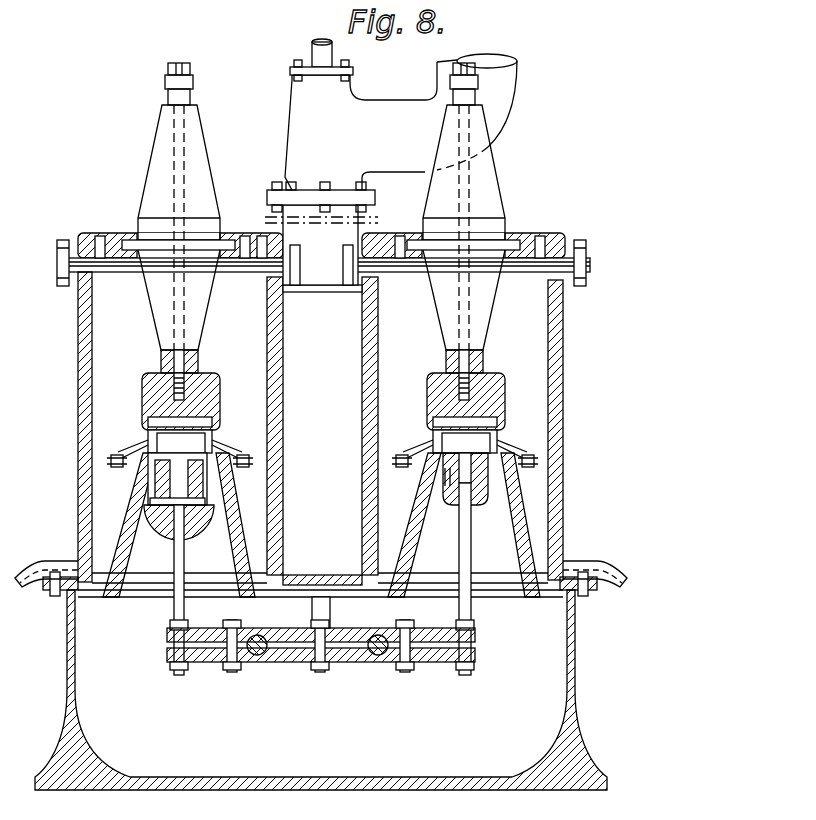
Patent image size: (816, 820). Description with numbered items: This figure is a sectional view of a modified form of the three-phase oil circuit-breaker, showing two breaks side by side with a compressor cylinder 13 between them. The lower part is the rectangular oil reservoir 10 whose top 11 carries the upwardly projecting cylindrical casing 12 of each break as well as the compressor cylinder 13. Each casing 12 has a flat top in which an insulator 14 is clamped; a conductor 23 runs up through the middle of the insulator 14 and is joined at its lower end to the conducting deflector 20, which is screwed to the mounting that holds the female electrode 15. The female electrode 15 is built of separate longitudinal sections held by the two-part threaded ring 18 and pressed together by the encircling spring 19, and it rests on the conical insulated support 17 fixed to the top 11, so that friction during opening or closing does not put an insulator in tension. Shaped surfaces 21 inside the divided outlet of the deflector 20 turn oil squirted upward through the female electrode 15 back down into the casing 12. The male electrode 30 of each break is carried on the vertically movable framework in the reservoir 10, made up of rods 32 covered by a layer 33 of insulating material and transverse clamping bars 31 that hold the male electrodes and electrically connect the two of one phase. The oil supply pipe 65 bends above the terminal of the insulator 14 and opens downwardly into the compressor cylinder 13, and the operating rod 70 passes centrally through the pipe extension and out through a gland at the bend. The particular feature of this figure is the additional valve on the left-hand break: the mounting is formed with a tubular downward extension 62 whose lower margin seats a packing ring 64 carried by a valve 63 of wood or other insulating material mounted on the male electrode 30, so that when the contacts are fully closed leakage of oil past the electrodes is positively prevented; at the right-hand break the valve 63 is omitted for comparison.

The oil reservoir 10 is at (322, 778).
The top 11 is at (52, 586).
The cylindrical casing 12 is at (80, 378).
The compressor cylinder 13 is at (343, 368).
The insulator 14 is at (200, 165).
The female electrode 15 is at (165, 515).
The conical insulated support 17 is at (160, 480).
The threaded ring 18 is at (152, 450).
The spring 19 is at (136, 500).
The deflector 20 is at (205, 385).
The surfaces 21 is at (212, 420).
The conductor 23 is at (184, 318).
The male electrode 30 is at (190, 520).
The transverse clamping bars 31 is at (293, 657).
The rods 32 is at (257, 655).
The layer of insulating material 33 is at (278, 634).
The tubular downward extension 62 is at (226, 475).
The valve 63 is at (170, 530).
The packing ring 64 is at (213, 507).
The oil supply pipe 65 is at (493, 58).
The operating rod 70 is at (333, 50).